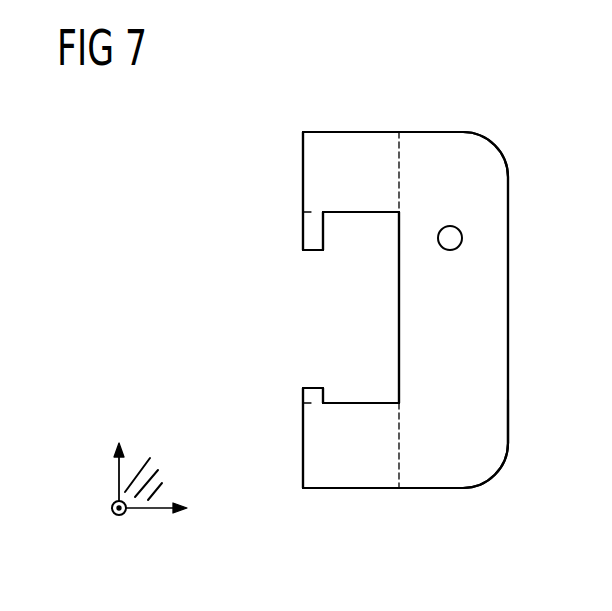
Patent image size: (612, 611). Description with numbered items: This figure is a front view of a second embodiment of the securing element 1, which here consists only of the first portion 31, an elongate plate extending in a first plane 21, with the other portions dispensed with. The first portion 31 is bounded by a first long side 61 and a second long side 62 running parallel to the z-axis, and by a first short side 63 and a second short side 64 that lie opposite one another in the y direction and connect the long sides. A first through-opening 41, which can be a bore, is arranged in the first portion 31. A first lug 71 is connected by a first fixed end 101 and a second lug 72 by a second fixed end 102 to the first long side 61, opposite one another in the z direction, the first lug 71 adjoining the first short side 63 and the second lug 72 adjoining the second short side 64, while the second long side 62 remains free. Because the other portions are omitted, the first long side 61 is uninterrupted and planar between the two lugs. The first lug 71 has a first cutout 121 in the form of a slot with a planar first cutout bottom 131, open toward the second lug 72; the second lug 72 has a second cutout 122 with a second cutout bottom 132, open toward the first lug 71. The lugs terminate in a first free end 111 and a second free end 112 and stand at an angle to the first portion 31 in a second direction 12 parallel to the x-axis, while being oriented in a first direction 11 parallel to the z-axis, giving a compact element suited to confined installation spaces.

The securing element 1 is at (220, 169).
The first direction 11 is at (119, 483).
The second direction 12 is at (122, 518).
The first plane 21 is at (148, 462).
The first portion 31 is at (492, 447).
The first through-opening 41 is at (450, 252).
The first long side 61 is at (399, 290).
The second long side 62 is at (508, 298).
The first short side 63 is at (433, 132).
The second short side 64 is at (443, 490).
The first lug 71 is at (346, 130).
The second lug 72 is at (350, 490).
The first fixed end 101 is at (400, 148).
The second fixed end 102 is at (399, 478).
The first free end 111 is at (303, 172).
The second free end 112 is at (303, 415).
The first cutout 121 is at (349, 253).
The second cutout 122 is at (341, 378).
The first cutout bottom 131 is at (370, 214).
The second cutout bottom 132 is at (372, 404).